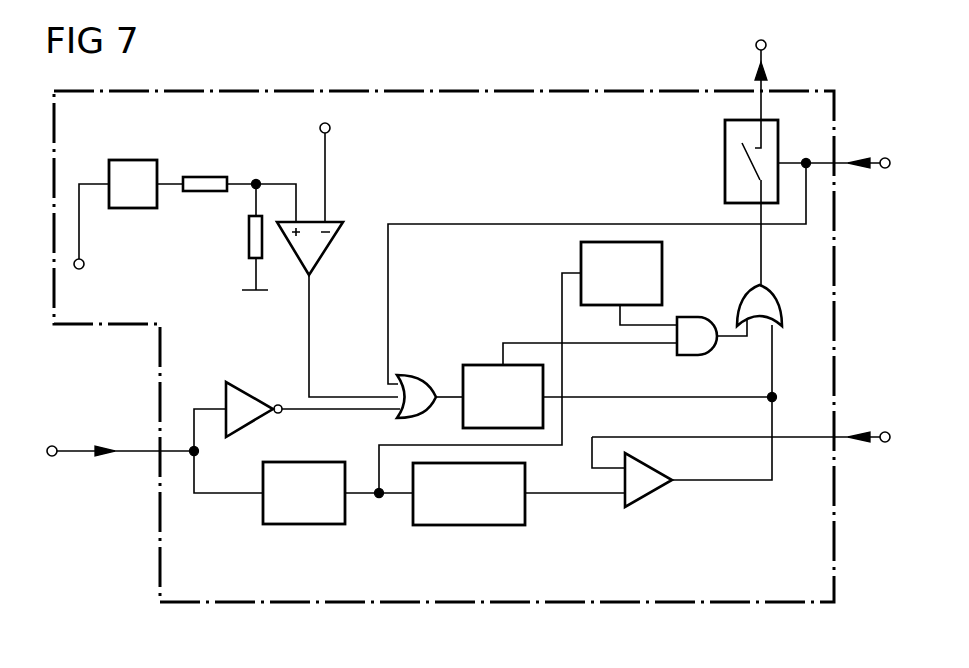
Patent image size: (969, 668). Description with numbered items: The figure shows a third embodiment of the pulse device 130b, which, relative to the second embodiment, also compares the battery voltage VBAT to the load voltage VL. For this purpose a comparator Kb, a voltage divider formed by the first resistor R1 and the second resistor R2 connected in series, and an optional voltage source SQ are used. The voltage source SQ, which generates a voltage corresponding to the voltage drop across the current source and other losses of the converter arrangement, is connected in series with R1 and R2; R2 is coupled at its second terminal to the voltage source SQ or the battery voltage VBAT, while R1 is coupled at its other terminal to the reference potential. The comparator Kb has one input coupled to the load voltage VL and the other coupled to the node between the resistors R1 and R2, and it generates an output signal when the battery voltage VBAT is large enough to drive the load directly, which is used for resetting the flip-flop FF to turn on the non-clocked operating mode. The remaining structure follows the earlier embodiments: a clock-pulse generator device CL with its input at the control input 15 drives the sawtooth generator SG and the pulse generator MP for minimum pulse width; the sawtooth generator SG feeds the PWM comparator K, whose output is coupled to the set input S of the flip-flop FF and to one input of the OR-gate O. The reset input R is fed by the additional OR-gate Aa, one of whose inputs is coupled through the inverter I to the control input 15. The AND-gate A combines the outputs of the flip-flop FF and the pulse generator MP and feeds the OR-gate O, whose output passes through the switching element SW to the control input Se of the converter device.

The pulse device 130b is at (450, 90).
The voltage source SQ is at (133, 208).
The battery voltage VBAT is at (101, 285).
The second resistor R2 is at (206, 172).
The first resistor R1 is at (249, 237).
The comparator Kb is at (328, 250).
The load voltage VL is at (342, 167).
The switching element SW is at (725, 163).
The control input of the converter device Se is at (778, 78).
The pulse generator MP is at (663, 274).
The flip-flop FF is at (488, 365).
The additional OR-gate Aa is at (427, 377).
The inverter I is at (252, 393).
The control input 15 is at (52, 446).
The clock-pulse generator device CL is at (303, 525).
The sawtooth generator SG is at (468, 525).
The comparator K is at (647, 497).
The logical AND-gate A is at (700, 355).
The logical OR-gate O is at (778, 293).